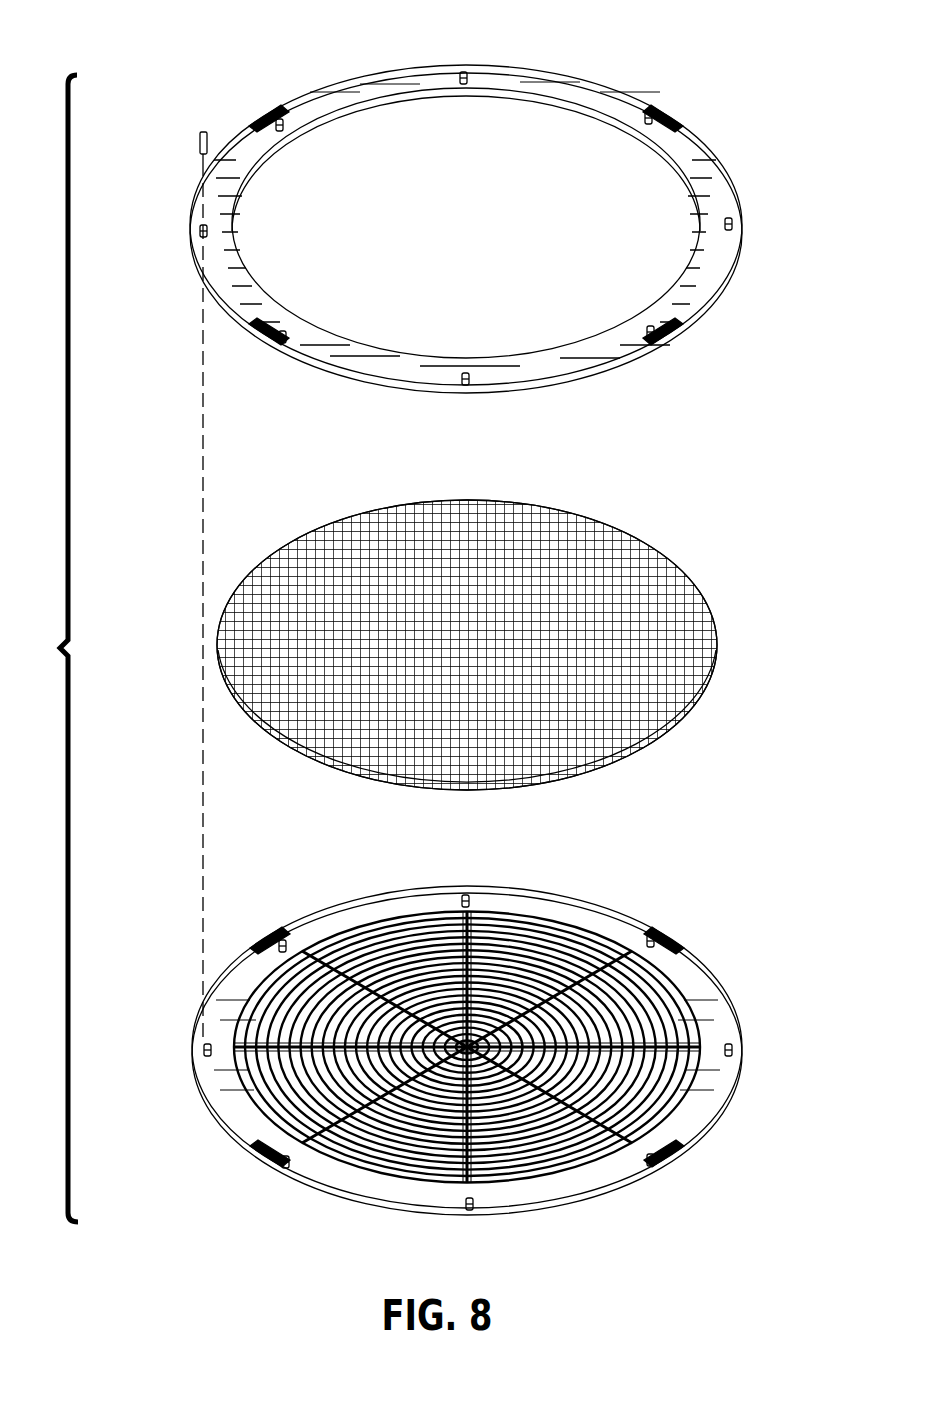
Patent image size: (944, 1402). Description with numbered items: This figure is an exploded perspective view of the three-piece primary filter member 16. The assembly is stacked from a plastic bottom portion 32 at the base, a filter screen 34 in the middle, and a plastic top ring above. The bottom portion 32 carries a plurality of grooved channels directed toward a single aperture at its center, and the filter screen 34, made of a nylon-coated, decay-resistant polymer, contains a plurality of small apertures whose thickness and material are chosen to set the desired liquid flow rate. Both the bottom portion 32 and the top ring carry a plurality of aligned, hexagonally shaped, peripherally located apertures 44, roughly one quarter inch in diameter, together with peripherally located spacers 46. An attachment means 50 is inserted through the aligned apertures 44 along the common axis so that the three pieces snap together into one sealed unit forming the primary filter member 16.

The primary filter member 16 is at (47, 648).
The bottom portion 32 is at (226, 1210).
The filter screen 34 is at (330, 545).
The apertures 44 is at (735, 225).
The spacers 46 is at (657, 350).
The attachment means 50 is at (203, 132).